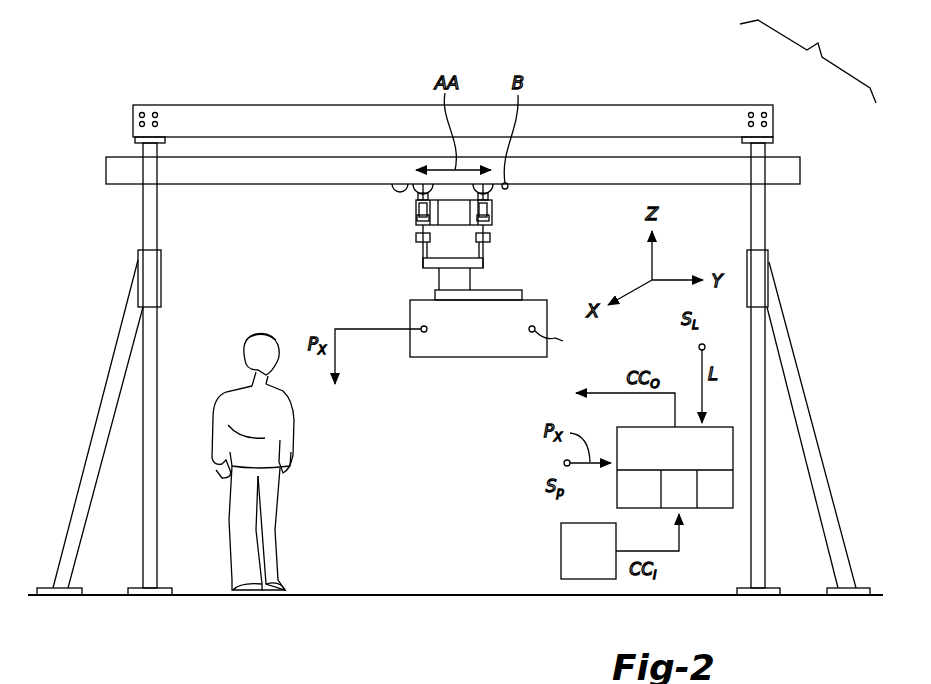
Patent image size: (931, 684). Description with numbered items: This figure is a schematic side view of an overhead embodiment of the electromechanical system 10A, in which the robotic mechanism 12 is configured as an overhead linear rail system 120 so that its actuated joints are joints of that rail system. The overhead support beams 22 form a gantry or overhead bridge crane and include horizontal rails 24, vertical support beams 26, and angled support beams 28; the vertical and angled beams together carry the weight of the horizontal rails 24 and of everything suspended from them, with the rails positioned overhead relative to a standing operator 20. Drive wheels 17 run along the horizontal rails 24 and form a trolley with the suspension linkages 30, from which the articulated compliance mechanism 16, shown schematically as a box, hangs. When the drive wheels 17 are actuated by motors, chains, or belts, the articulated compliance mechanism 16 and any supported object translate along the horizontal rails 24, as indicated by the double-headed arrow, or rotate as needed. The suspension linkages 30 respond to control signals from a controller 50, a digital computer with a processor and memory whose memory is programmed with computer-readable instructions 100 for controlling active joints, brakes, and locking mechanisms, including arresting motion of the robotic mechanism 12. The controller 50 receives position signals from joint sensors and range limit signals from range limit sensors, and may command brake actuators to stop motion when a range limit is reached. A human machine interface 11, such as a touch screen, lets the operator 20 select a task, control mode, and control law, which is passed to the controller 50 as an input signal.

The overhead linear rail system 120 is at (205, 77).
The electromechanical system 10A is at (808, 60).
The overhead support beams 22 is at (81, 107).
The horizontal rails 24 is at (800, 170).
The vertical support beams 26 is at (157, 216).
The angled support beams 28 is at (95, 425).
The robotic mechanism 12 is at (308, 257).
The drive wheels 17 is at (392, 198).
The suspension linkages 30 is at (510, 238).
The articulated compliance mechanism 16 is at (466, 340).
The operator 20 is at (242, 318).
The controller 50 is at (663, 458).
The computer-readable instructions 100 is at (626, 502).
The human machine interface 11 is at (561, 551).